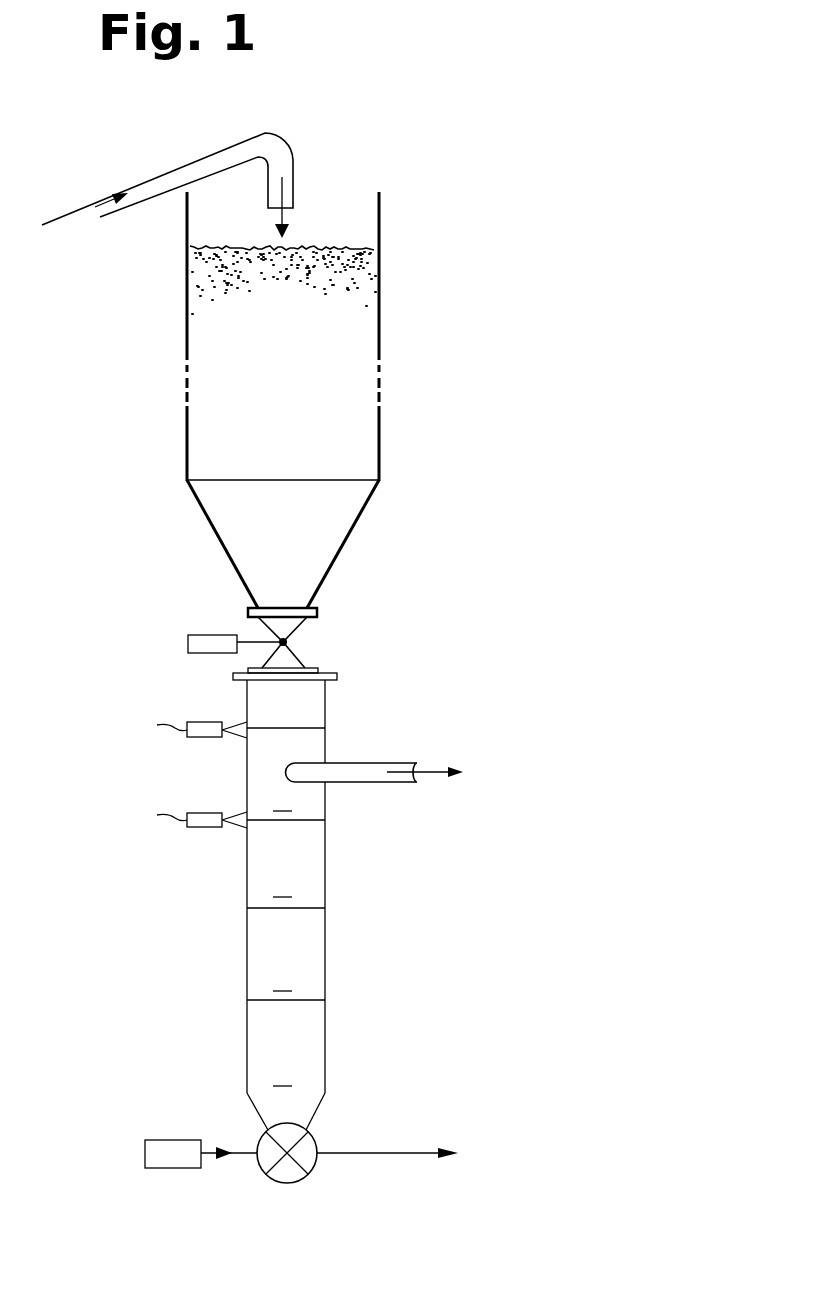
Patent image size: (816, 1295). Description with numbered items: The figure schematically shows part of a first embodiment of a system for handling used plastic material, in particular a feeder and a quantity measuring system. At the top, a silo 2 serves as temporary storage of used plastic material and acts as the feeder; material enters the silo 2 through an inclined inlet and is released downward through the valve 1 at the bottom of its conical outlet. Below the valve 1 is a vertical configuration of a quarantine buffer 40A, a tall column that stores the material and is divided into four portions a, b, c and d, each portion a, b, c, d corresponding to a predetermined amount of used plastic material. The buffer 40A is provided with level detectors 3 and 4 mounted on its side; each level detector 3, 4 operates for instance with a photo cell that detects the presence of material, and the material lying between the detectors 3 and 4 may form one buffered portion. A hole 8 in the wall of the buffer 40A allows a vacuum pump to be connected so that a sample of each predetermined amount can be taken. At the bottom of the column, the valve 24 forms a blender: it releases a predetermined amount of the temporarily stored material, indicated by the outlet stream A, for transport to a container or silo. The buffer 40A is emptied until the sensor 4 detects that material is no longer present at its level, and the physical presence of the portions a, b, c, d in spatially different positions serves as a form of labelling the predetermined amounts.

The valve 1 is at (285, 641).
The silo 2 is at (379, 222).
The level detector 3 is at (200, 722).
The level detector 4 is at (202, 817).
The hole 8 is at (370, 767).
The valve 24 is at (314, 1184).
The quarantine buffer 40A is at (389, 868).
The portion a is at (282, 799).
The portion b is at (282, 885).
The portion c is at (282, 979).
The portion d is at (282, 1074).
The product outlet A is at (475, 1153).